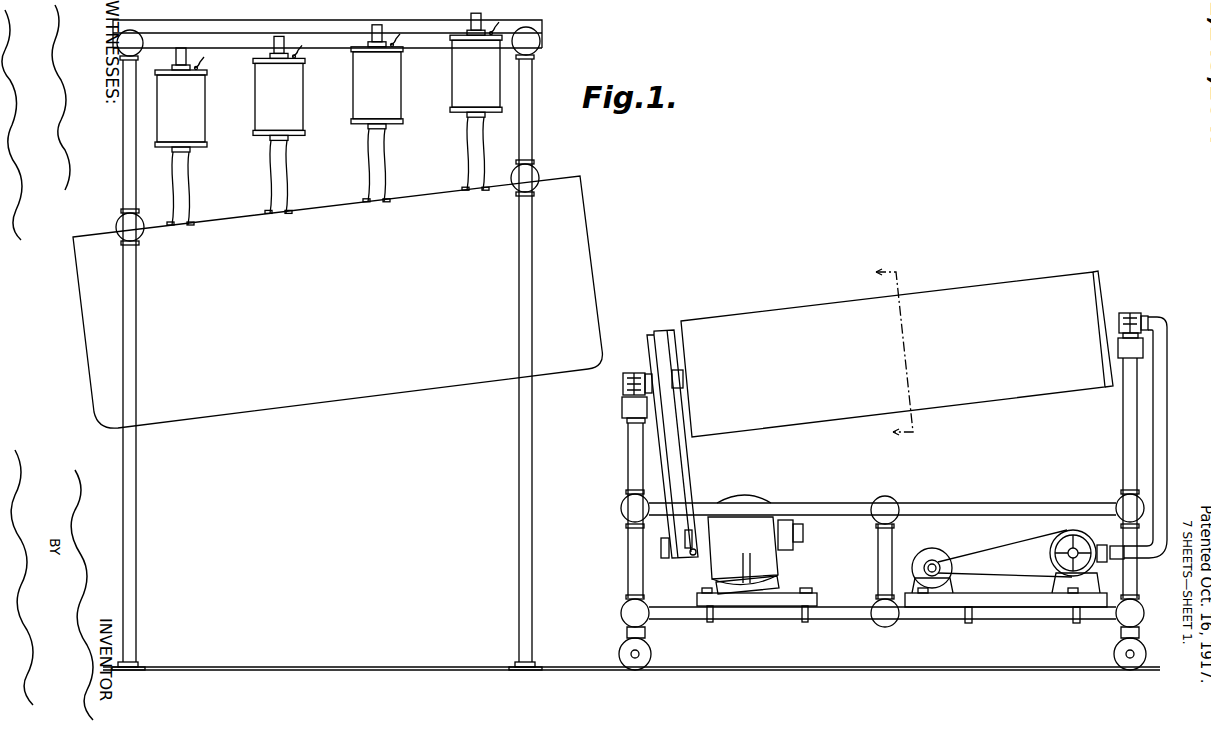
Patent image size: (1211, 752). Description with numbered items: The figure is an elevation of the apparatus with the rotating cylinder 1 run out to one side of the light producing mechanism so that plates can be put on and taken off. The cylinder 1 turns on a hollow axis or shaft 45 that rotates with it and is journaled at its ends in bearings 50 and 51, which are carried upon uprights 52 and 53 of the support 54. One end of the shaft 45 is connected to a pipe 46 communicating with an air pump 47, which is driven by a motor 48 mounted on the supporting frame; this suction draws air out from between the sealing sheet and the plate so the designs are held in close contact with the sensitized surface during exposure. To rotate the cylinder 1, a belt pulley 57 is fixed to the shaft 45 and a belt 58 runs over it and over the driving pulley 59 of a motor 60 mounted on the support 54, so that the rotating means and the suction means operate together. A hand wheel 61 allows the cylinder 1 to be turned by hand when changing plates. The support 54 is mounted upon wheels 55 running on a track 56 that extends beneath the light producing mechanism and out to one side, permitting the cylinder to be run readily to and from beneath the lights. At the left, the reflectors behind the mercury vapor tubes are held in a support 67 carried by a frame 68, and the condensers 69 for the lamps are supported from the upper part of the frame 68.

The cylinder 1 is at (972, 284).
The shaft 45 is at (1112, 318).
The pipe 46 is at (1166, 366).
The air pump 47 is at (1061, 530).
The motor 48 is at (940, 553).
The bearing 50 is at (1134, 317).
The bearing 51 is at (630, 372).
The upright 52 is at (1141, 431).
The upright 53 is at (633, 457).
The support 54 is at (856, 613).
The wheels 55 is at (651, 655).
The track 56 is at (890, 671).
The belt pulley 57 is at (668, 327).
The belt 58 is at (680, 463).
The driving pulley 59 is at (673, 555).
The motor 60 is at (740, 500).
The hand wheel 61 is at (1096, 270).
The support 67 is at (590, 234).
The frame 68 is at (516, 421).
The condensers 69 is at (352, 123).